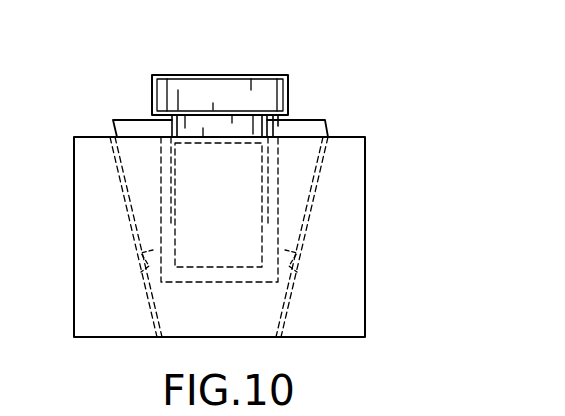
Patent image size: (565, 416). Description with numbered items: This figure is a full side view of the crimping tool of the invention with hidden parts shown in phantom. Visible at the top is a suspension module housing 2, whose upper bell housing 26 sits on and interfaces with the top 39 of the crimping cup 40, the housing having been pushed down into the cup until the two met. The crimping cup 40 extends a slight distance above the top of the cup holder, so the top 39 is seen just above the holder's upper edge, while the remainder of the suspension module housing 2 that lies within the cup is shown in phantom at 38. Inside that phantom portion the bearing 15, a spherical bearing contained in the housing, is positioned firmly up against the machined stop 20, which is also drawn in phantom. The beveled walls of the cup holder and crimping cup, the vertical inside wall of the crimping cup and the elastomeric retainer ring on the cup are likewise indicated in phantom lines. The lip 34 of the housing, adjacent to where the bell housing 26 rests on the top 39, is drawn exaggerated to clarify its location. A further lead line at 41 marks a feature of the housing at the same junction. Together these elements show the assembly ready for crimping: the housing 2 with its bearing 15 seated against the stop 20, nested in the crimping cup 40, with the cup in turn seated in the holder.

The suspension module housing 2 is at (47, 96).
The bearing 15 is at (247, 170).
The machined stop 20 is at (171, 224).
The bell housing 26 is at (238, 90).
The lip 34 is at (172, 126).
The phantom remainder of the suspension module housing 38 is at (250, 252).
The top of the crimping cup 39 is at (128, 119).
The crimping cup 40 is at (305, 167).
The lip 41 is at (277, 115).